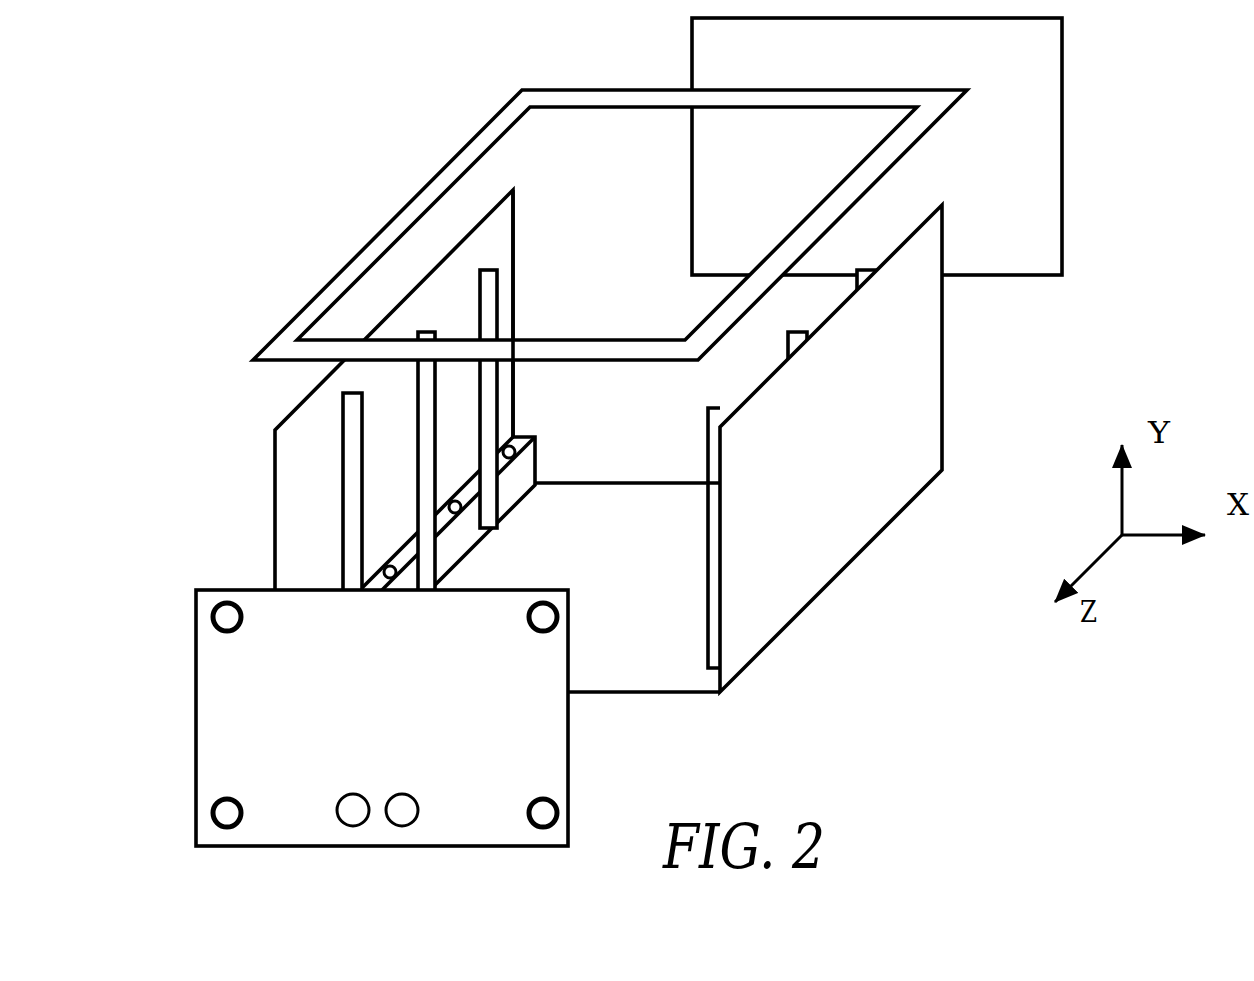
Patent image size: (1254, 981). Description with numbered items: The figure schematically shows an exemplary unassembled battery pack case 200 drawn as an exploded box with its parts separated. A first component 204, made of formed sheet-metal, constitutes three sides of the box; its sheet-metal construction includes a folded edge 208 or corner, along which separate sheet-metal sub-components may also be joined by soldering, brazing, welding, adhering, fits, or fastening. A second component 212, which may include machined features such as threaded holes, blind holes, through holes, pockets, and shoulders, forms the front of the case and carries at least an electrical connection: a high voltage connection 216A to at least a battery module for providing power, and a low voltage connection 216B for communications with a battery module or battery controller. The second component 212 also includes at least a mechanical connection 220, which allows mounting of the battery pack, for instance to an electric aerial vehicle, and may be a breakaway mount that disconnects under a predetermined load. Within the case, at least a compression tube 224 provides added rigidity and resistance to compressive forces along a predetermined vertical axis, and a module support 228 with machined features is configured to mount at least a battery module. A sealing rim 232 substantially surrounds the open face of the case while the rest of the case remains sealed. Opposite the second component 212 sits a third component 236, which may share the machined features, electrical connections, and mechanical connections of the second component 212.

The case 200 is at (377, 93).
The first component 204 is at (275, 430).
The folded edge 208 is at (840, 570).
The second component 212 is at (329, 740).
The high voltage connection 216A is at (343, 825).
The low voltage connection 216B is at (402, 823).
The mechanical connection 220 is at (218, 803).
The compression tube 224 is at (502, 373).
The module support 228 is at (455, 518).
The sealing rim 232 is at (692, 325).
The third component 236 is at (690, 157).